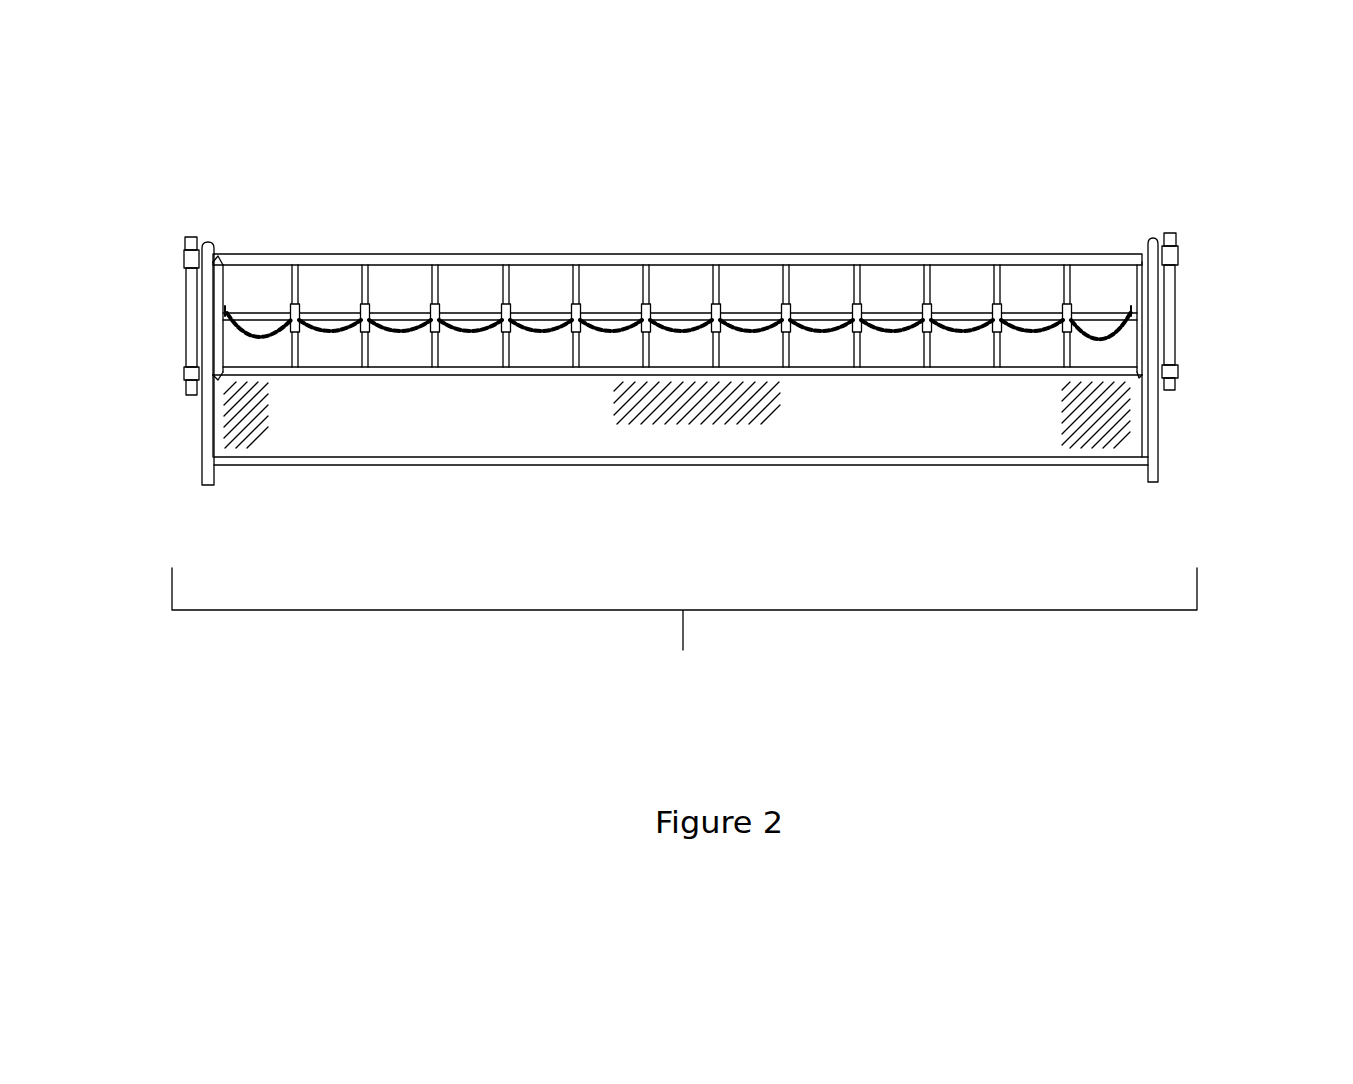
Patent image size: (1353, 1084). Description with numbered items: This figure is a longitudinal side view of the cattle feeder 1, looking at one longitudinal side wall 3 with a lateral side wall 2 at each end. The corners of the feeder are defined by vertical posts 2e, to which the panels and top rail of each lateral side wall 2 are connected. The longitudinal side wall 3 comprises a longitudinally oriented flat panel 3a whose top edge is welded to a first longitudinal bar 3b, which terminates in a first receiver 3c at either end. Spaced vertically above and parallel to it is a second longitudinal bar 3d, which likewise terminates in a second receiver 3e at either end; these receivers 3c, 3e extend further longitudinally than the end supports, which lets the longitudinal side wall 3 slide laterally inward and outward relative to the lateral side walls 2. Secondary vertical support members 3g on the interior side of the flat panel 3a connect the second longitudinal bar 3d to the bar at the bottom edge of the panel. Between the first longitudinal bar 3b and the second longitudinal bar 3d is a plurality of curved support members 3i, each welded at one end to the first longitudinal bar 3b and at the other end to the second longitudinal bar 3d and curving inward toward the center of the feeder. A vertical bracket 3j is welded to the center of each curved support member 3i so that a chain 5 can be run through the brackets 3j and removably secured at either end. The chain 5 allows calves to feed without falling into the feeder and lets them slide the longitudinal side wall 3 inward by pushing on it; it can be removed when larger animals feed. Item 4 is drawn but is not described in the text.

The cattle feeder 1 is at (684, 631).
The lateral side wall 2 is at (176, 444).
The vertical post 2e is at (208, 443).
The longitudinal side wall 3 is at (630, 517).
The longitudinally oriented flat panel 3a is at (460, 432).
The first longitudinal bar 3b is at (390, 372).
The first receiver 3c is at (187, 378).
The second longitudinal bar 3d is at (950, 260).
The second receiver 3e is at (188, 270).
The secondary vertical support member 3g is at (522, 463).
The curved support member 3i is at (713, 273).
The vertical bracket 3j is at (507, 310).
The mounting bolt 4 is at (193, 330).
The chain 5 is at (250, 333).